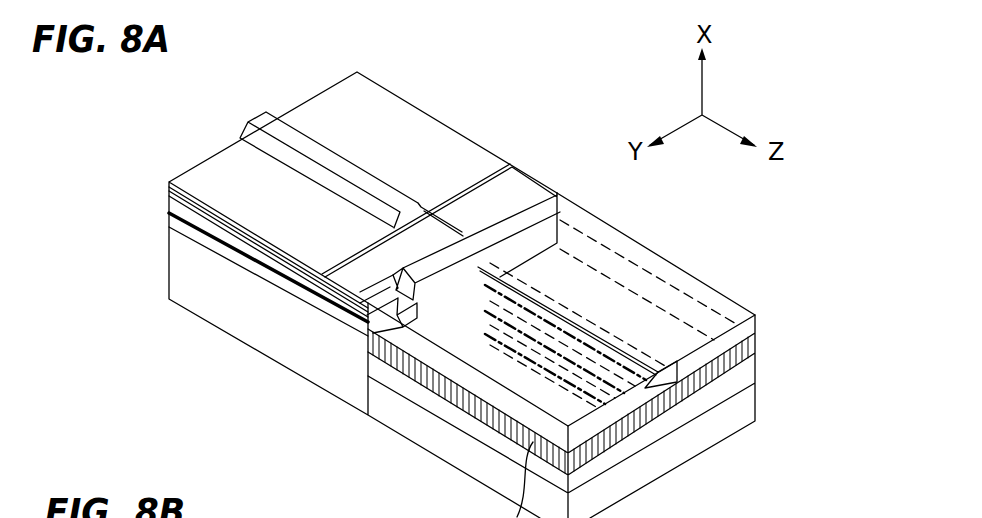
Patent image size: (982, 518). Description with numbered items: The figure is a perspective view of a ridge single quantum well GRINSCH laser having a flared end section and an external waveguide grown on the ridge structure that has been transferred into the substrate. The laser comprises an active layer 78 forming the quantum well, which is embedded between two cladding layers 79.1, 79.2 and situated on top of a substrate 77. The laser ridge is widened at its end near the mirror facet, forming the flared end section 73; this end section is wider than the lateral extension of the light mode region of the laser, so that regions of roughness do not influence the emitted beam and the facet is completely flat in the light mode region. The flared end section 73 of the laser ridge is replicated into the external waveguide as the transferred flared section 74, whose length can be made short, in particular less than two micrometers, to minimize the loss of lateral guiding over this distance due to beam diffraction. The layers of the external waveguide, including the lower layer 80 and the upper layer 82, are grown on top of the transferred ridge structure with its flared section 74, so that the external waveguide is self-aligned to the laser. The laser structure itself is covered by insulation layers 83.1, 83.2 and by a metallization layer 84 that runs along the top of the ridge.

The flared end section 73 is at (488, 215).
The transferred flared section 74 is at (506, 232).
The substrate 77 is at (176, 277).
The active layer 78 is at (173, 208).
The cladding layer 79.1 is at (173, 222).
The cladding layer 79.2 is at (173, 201).
The external waveguide layer 80 is at (684, 413).
The external waveguide layer 82 is at (700, 293).
The insulation layer 83.1 is at (538, 197).
The insulation layer 83.2 is at (358, 288).
The metallization layer 84 is at (447, 132).